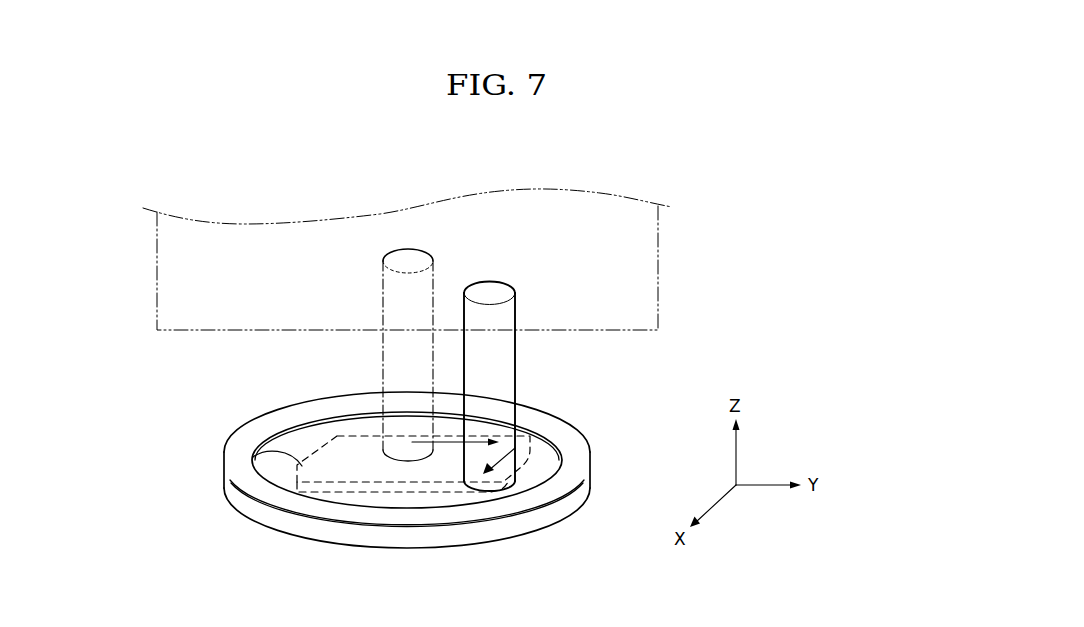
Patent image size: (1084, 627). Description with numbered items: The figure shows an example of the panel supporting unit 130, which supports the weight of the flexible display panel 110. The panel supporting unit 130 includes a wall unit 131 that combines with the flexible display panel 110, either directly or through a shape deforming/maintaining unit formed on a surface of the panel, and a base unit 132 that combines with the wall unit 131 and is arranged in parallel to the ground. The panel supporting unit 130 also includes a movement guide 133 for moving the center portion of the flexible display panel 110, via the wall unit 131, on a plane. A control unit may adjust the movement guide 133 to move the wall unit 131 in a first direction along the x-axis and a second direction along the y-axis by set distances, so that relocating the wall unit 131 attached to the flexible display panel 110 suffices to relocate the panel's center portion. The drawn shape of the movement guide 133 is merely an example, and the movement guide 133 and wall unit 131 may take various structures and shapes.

The flexible display panel 110 is at (643, 273).
The panel supporting unit 130 is at (229, 399).
The wall unit 131 is at (397, 362).
The base unit 132 is at (579, 462).
The movement guide 133 is at (253, 457).